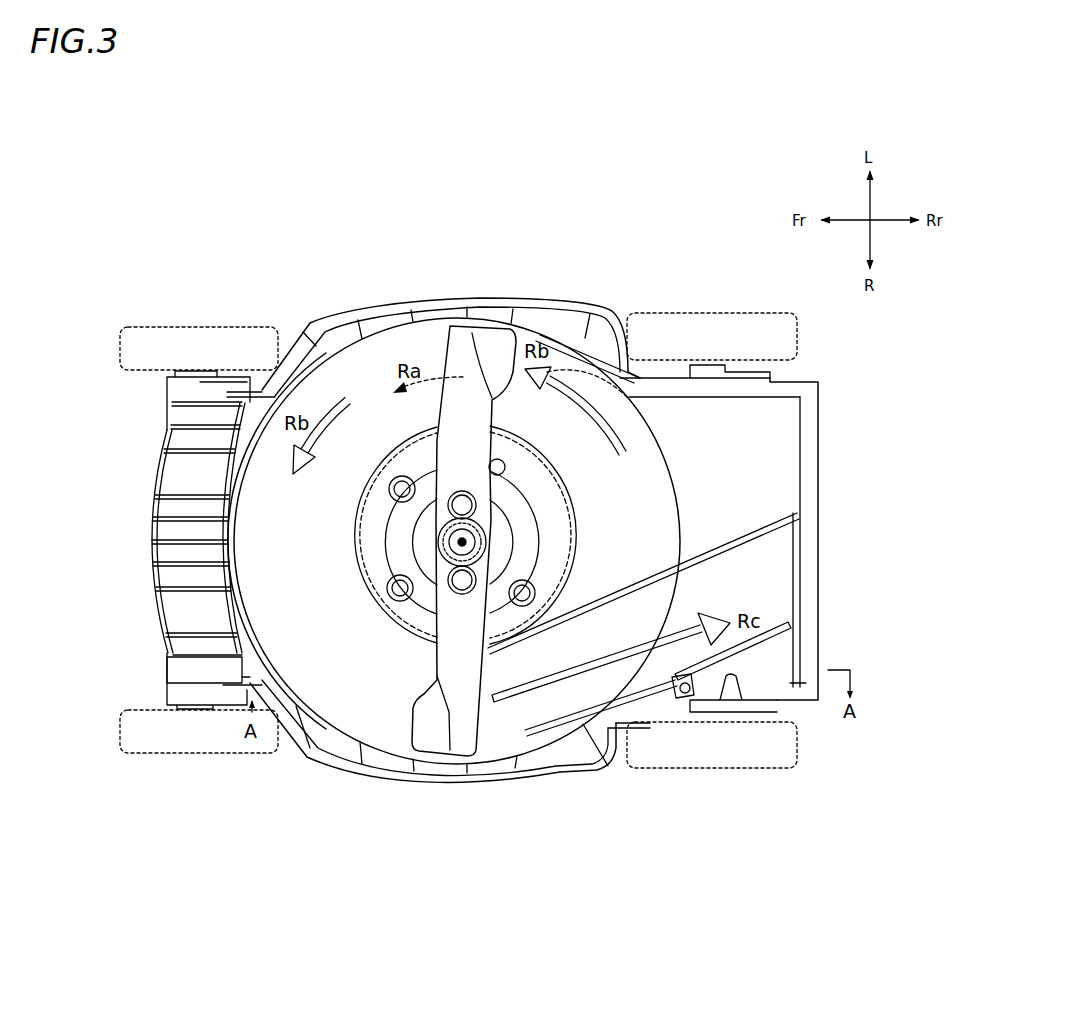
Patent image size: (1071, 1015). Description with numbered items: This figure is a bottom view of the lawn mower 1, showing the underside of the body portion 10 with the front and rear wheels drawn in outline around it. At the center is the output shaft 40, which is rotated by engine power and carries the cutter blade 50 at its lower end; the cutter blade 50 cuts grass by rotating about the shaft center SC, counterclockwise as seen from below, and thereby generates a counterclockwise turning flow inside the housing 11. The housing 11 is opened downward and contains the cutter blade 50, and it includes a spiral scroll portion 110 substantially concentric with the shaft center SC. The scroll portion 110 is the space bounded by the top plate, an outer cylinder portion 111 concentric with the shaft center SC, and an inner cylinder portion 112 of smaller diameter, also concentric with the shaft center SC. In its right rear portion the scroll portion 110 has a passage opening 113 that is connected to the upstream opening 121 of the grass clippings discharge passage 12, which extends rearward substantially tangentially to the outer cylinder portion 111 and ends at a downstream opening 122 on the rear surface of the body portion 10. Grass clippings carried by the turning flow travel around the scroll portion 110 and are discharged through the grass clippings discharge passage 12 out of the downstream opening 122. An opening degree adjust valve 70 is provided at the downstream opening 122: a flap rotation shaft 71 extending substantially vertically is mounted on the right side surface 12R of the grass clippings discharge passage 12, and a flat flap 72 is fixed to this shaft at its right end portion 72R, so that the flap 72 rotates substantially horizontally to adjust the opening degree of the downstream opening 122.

The lawn mower 1 is at (86, 328).
The body portion 10 is at (160, 446).
The housing 11 is at (276, 571).
The scroll portion 110 is at (265, 493).
The outer cylinder portion 111 is at (240, 532).
The inner cylinder portion 112 is at (350, 540).
The passage opening 113 is at (583, 626).
The grass clippings discharge passage 12 is at (782, 587).
The upstream opening 121 is at (579, 690).
The downstream opening 122 is at (803, 564).
The right side surface 12R is at (743, 700).
The output shaft 40 is at (402, 478).
The cutter blade 50 is at (493, 342).
The shaft center SC is at (450, 532).
The opening degree adjust valve 70 is at (750, 656).
The flap rotation shaft 71 is at (686, 695).
The flap 72 is at (795, 634).
The right end portion 72R is at (670, 676).